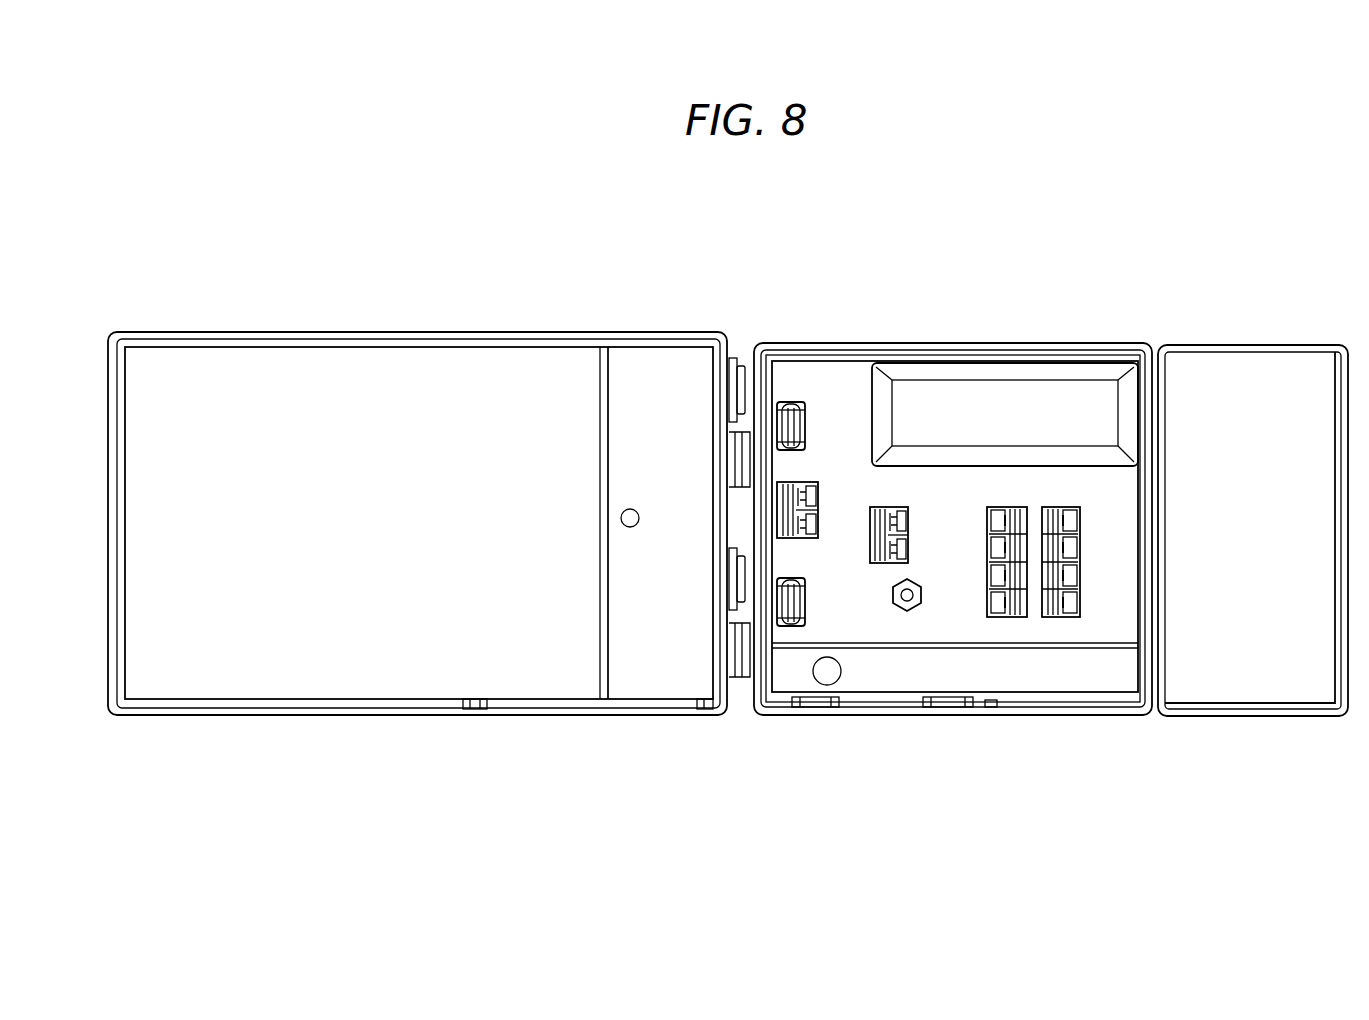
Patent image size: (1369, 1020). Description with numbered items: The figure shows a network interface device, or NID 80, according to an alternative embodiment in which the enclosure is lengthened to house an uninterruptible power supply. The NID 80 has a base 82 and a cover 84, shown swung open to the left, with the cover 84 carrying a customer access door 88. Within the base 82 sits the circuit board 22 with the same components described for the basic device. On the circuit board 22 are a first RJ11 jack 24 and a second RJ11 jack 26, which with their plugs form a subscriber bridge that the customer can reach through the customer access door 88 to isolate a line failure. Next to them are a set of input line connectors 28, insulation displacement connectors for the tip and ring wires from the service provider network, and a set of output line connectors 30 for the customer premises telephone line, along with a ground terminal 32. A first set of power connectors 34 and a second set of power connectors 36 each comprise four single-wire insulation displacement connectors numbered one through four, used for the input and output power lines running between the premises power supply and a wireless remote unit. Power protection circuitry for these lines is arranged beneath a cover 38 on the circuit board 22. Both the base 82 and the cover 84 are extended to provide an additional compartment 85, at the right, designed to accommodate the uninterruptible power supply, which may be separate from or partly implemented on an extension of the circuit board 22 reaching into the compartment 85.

The NID 80 is at (988, 240).
The cover 84 is at (332, 333).
The customer access door 88 is at (668, 636).
The printed circuit board 22 is at (822, 370).
The base 82 is at (990, 720).
The cover 38 is at (1028, 429).
The first RJ11 jack 24 is at (808, 427).
The second RJ11 jack 26 is at (808, 602).
The input line connectors 28 is at (820, 492).
The output line connectors 30 is at (868, 541).
The ground terminal 32 is at (920, 607).
The first set of power connectors 34 is at (985, 520).
The second set of power connectors 36 is at (1081, 528).
The compartment 85 is at (1248, 395).